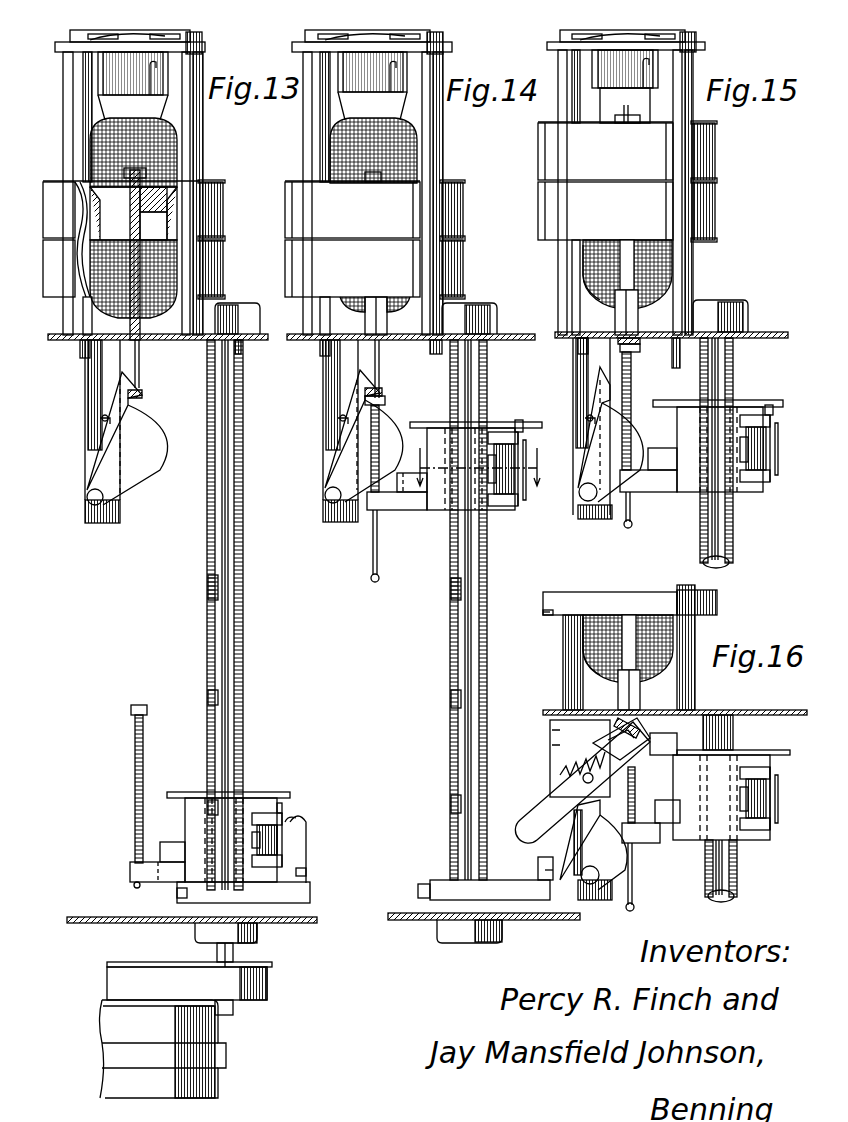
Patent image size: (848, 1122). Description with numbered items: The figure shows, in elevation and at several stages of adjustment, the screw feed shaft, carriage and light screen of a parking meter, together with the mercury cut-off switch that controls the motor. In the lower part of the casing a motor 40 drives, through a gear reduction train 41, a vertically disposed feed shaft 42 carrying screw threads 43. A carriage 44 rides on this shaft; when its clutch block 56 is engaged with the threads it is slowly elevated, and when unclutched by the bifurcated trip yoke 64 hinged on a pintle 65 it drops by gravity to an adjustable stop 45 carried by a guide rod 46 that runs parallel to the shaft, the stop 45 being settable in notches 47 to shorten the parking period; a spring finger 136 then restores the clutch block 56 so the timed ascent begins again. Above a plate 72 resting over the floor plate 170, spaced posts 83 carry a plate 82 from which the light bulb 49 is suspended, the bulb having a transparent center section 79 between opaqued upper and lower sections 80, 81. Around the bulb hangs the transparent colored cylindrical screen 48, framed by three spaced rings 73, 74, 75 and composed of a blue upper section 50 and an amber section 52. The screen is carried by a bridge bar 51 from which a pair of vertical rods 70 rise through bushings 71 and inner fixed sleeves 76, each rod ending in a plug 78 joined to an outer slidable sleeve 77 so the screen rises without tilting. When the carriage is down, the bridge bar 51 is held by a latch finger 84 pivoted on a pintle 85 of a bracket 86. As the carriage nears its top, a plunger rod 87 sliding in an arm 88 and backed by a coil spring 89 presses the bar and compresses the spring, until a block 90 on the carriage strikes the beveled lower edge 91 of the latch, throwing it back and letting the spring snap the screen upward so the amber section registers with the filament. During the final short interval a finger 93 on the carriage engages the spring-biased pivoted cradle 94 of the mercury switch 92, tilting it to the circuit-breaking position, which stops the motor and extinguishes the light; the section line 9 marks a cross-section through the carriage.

In FIG. 14, the section line 9 is at (478, 467).
In FIG. 13, the motor 40 is at (205, 1030).
In FIG. 13, the gear reduction train 41 is at (252, 986).
In FIG. 13, the feed shaft 42 is at (233, 953).
In FIG. 13, the screw threads 43 is at (243, 712).
In FIG. 14, the screw threads 43 is at (487, 540).
In FIG. 15, the screw threads 43 is at (733, 524).
In FIG. 16, the screw threads 43 is at (737, 868).
In FIG. 13, the carriage 44 is at (255, 798).
In FIG. 14, the carriage 44 is at (498, 428).
In FIG. 15, the carriage 44 is at (688, 407).
In FIG. 16, the carriage 44 is at (700, 830).
In FIG. 13, the adjustable stop 45 is at (302, 895).
In FIG. 14, the adjustable stop 45 is at (450, 884).
In FIG. 13, the guide rod 46 is at (225, 632).
In FIG. 14, the guide rod 46 is at (465, 746).
In FIG. 15, the guide rod 46 is at (712, 537).
In FIG. 16, the guide rod 46 is at (716, 882).
In FIG. 13, the notches 47 is at (208, 587).
In FIG. 14, the notches 47 is at (451, 588).
In FIG. 13, the transparent colored cylindrical screen 48 is at (228, 229).
In FIG. 14, the transparent colored cylindrical screen 48 is at (468, 231).
In FIG. 15, the transparent colored cylindrical screen 48 is at (720, 195).
In FIG. 16, the transparent colored cylindrical screen 48 is at (538, 610).
In FIG. 13, the light bulb 49 is at (175, 146).
In FIG. 14, the light bulb 49 is at (420, 148).
In FIG. 15, the light bulb 49 is at (660, 261).
In FIG. 16, the light bulb 49 is at (600, 642).
In FIG. 13, the upper section 50 is at (223, 206).
In FIG. 14, the upper section 50 is at (463, 209).
In FIG. 15, the upper section 50 is at (715, 156).
In FIG. 13, the bridge bar 51 is at (143, 394).
In FIG. 14, the bridge bar 51 is at (383, 392).
In FIG. 15, the bridge bar 51 is at (641, 342).
In FIG. 16, the bridge bar 51 is at (640, 728).
In FIG. 13, the amber section 52 is at (223, 274).
In FIG. 14, the amber section 52 is at (463, 262).
In FIG. 15, the amber section 52 is at (715, 220).
In FIG. 16, the amber section 52 is at (585, 592).
In FIG. 13, the clutch block 56 is at (282, 830).
In FIG. 14, the clutch block 56 is at (520, 446).
In FIG. 15, the clutch block 56 is at (772, 432).
In FIG. 16, the clutch block 56 is at (775, 782).
In FIG. 13, the trip yoke 64 is at (280, 820).
In FIG. 14, the trip yoke 64 is at (522, 490).
In FIG. 15, the trip yoke 64 is at (775, 477).
In FIG. 16, the trip yoke 64 is at (775, 830).
In FIG. 13, the pintle 65 is at (252, 838).
In FIG. 14, the pintle 65 is at (490, 468).
In FIG. 15, the pintle 65 is at (755, 448).
In FIG. 16, the pintle 65 is at (755, 798).
In FIG. 13, the vertical rods 70 is at (140, 366).
In FIG. 14, the vertical rods 70 is at (380, 360).
In FIG. 15, the vertical rods 70 is at (626, 106).
In FIG. 13, the bushing 71 is at (140, 320).
In FIG. 14, the bushing 71 is at (387, 312).
In FIG. 15, the bushing 71 is at (638, 316).
In FIG. 16, the bushing 71 is at (618, 699).
In FIG. 13, the plate 72 is at (165, 341).
In FIG. 14, the plate 72 is at (497, 334).
In FIG. 15, the plate 72 is at (766, 332).
In FIG. 16, the plate 72 is at (766, 710).
In FIG. 13, the ring 73 is at (75, 181).
In FIG. 14, the ring 73 is at (300, 181).
In FIG. 15, the ring 73 is at (538, 125).
In FIG. 13, the ring 74 is at (78, 223).
In FIG. 14, the ring 74 is at (292, 236).
In FIG. 15, the ring 74 is at (545, 180).
In FIG. 13, the ring 75 is at (76, 270).
In FIG. 14, the ring 75 is at (292, 291).
In FIG. 15, the ring 75 is at (545, 234).
In FIG. 16, the ring 75 is at (543, 614).
In FIG. 13, the inner fixed sleeve 76 is at (154, 226).
In FIG. 15, the inner fixed sleeve 76 is at (622, 290).
In FIG. 16, the inner fixed sleeve 76 is at (630, 615).
In FIG. 13, the outer slidable sleeve 77 is at (133, 213).
In FIG. 13, the plug 78 is at (148, 170).
In FIG. 14, the plug 78 is at (370, 182).
In FIG. 15, the plug 78 is at (624, 123).
In FIG. 13, the transparent center section 79 is at (96, 203).
In FIG. 13, the opaqued upper section 80 is at (165, 118).
In FIG. 14, the opaqued upper section 80 is at (332, 138).
In FIG. 15, the opaqued upper section 80 is at (625, 86).
In FIG. 13, the opaqued lower section 81 is at (112, 306).
In FIG. 14, the opaqued lower section 81 is at (355, 306).
In FIG. 15, the opaqued lower section 81 is at (590, 262).
In FIG. 16, the opaqued lower section 81 is at (590, 660).
In FIG. 13, the plate 82 is at (205, 48).
In FIG. 14, the plate 82 is at (452, 48).
In FIG. 15, the plate 82 is at (705, 47).
In FIG. 13, the posts or standards 83 is at (193, 62).
In FIG. 14, the posts or standards 83 is at (303, 101).
In FIG. 15, the posts or standards 83 is at (558, 100).
In FIG. 16, the posts or standards 83 is at (695, 618).
In FIG. 13, the latch finger 84 is at (108, 407).
In FIG. 14, the latch finger 84 is at (350, 408).
In FIG. 15, the latch finger 84 is at (592, 398).
In FIG. 16, the latch finger 84 is at (580, 845).
In FIG. 13, the pintle 85 is at (87, 497).
In FIG. 14, the pintle 85 is at (325, 494).
In FIG. 15, the pintle 85 is at (582, 503).
In FIG. 16, the pintle 85 is at (590, 884).
In FIG. 13, the bracket 86 is at (102, 523).
In FIG. 14, the bracket 86 is at (340, 522).
In FIG. 15, the bracket 86 is at (595, 519).
In FIG. 16, the bracket 86 is at (612, 900).
In FIG. 13, the plunger rod 87 is at (137, 705).
In FIG. 14, the plunger rod 87 is at (385, 402).
In FIG. 15, the plunger rod 87 is at (633, 352).
In FIG. 13, the arm 88 is at (130, 870).
In FIG. 14, the arm 88 is at (367, 512).
In FIG. 15, the arm 88 is at (638, 492).
In FIG. 16, the arm 88 is at (636, 843).
In FIG. 13, the coil spring 89 is at (135, 785).
In FIG. 14, the coil spring 89 is at (371, 457).
In FIG. 15, the coil spring 89 is at (631, 391).
In FIG. 16, the coil spring 89 is at (635, 792).
In FIG. 13, the block or projection 90 is at (170, 842).
In FIG. 14, the block or projection 90 is at (410, 496).
In FIG. 15, the block or projection 90 is at (663, 448).
In FIG. 16, the block or projection 90 is at (670, 808).
In FIG. 13, the beveled lower edge 91 is at (147, 488).
In FIG. 14, the beveled lower edge 91 is at (385, 500).
In FIG. 15, the beveled lower edge 91 is at (640, 468).
In FIG. 16, the beveled lower edge 91 is at (620, 878).
In FIG. 16, the mercury switch 92 is at (545, 820).
In FIG. 16, the finger 93 is at (650, 737).
In FIG. 16, the cradle 94 is at (640, 760).
In FIG. 13, the spring finger 136 is at (308, 833).
In FIG. 14, the spring finger 136 is at (538, 872).
In FIG. 13, the floor plate 170 is at (298, 924).
In FIG. 14, the floor plate 170 is at (403, 920).